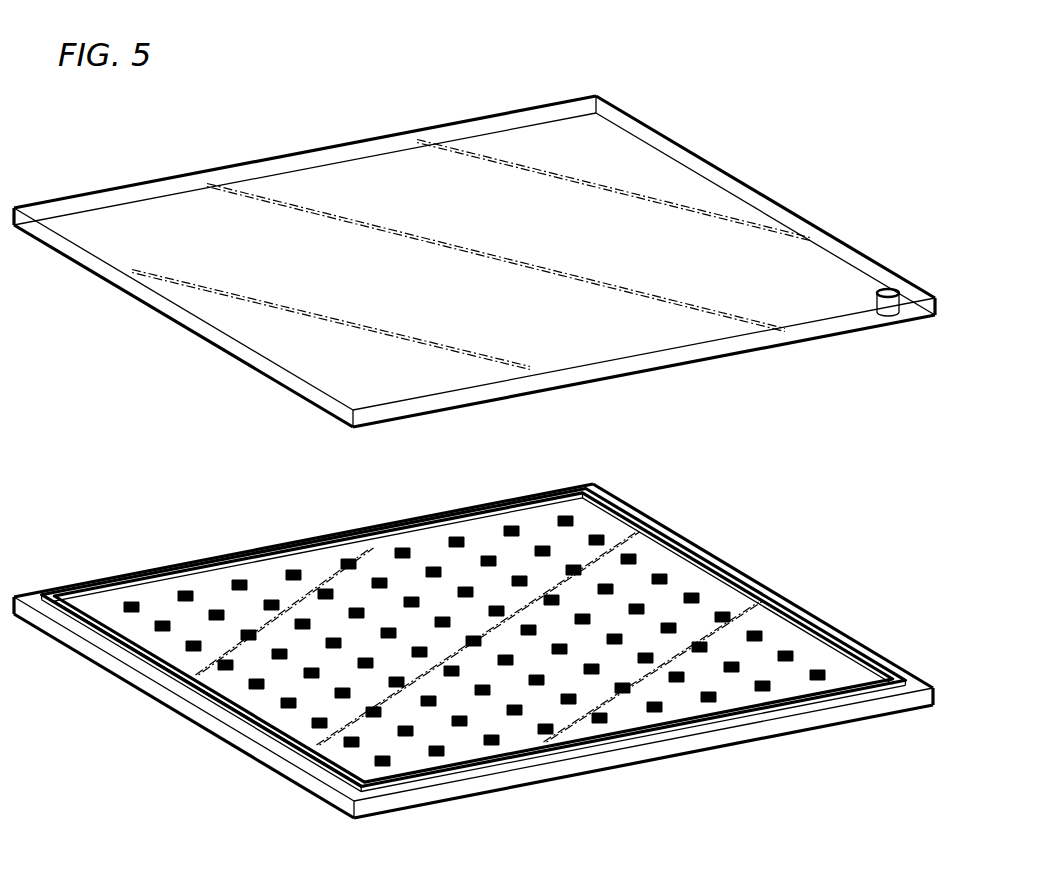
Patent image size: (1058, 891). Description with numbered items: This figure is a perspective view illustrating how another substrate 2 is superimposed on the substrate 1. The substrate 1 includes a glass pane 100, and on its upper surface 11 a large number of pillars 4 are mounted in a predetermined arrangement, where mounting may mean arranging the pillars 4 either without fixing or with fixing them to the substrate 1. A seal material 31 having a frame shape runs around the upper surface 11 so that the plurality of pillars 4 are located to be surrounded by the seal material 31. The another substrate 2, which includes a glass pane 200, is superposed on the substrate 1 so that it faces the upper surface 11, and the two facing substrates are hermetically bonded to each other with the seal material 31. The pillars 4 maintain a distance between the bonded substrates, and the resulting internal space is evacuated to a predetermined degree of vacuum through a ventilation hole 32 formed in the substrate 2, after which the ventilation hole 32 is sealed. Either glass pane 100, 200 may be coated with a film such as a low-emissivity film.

The substrate 1 is at (473, 645).
The another substrate 2 is at (332, 180).
The glass pane 200 is at (429, 170).
The ventilation hole 32 is at (890, 290).
The glass pane 100 is at (195, 706).
The seal material 31 is at (795, 612).
The upper surface 11 is at (388, 568).
The pillars 4 is at (238, 580).